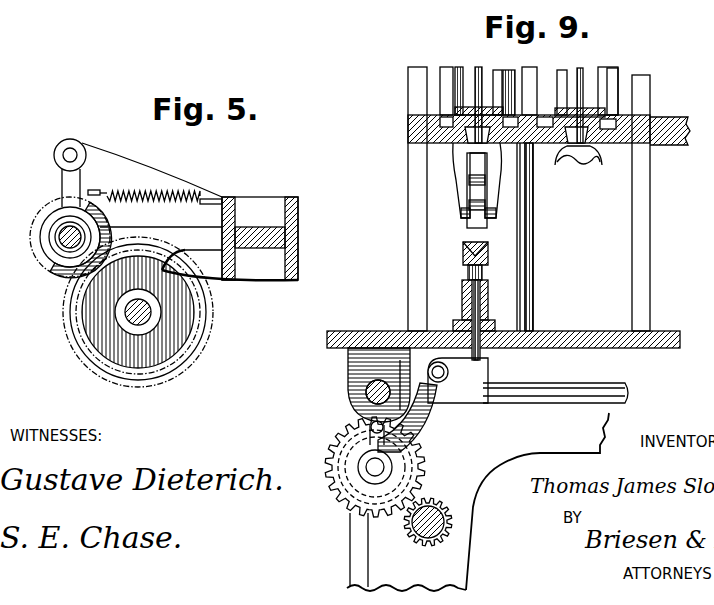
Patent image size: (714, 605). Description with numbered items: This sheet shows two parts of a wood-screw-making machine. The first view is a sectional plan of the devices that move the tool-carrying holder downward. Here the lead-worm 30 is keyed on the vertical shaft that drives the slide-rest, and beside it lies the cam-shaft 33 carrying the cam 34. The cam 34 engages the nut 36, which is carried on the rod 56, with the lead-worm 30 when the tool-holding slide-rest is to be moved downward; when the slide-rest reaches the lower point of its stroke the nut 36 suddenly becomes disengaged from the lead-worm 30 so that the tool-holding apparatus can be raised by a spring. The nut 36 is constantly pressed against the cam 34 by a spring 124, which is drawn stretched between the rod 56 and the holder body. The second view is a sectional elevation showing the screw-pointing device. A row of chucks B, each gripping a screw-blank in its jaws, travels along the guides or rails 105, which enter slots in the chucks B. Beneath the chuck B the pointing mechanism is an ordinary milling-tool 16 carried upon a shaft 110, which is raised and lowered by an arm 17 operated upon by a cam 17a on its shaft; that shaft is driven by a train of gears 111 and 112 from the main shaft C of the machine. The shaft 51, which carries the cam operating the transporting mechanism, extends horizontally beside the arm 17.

In FIG. 5, the rod 56 is at (75, 141).
In FIG. 5, the spring 124 is at (183, 184).
In FIG. 5, the lead-worm 30 is at (40, 240).
In FIG. 5, the nut 36 is at (68, 280).
In FIG. 5, the cam-shaft 33 is at (152, 312).
In FIG. 5, the cam 34 is at (138, 312).
In FIG. 9, the chuck B is at (616, 81).
In FIG. 9, the guides or rails 105 is at (652, 116).
In FIG. 9, the milling-tool 16 is at (488, 251).
In FIG. 9, the shaft 110 is at (462, 301).
In FIG. 9, the arm 17 is at (488, 366).
In FIG. 9, the shaft 51 is at (532, 409).
In FIG. 9, the cam 17a is at (346, 363).
In FIG. 9, the gear 111 is at (335, 401).
In FIG. 9, the gear 112 is at (330, 481).
In FIG. 9, the main shaft C is at (413, 544).